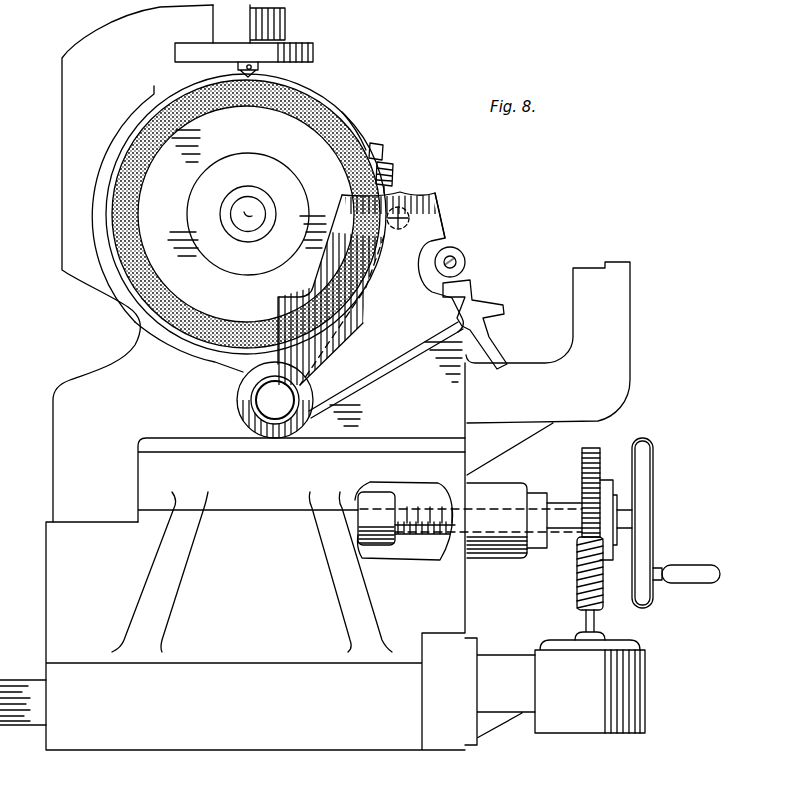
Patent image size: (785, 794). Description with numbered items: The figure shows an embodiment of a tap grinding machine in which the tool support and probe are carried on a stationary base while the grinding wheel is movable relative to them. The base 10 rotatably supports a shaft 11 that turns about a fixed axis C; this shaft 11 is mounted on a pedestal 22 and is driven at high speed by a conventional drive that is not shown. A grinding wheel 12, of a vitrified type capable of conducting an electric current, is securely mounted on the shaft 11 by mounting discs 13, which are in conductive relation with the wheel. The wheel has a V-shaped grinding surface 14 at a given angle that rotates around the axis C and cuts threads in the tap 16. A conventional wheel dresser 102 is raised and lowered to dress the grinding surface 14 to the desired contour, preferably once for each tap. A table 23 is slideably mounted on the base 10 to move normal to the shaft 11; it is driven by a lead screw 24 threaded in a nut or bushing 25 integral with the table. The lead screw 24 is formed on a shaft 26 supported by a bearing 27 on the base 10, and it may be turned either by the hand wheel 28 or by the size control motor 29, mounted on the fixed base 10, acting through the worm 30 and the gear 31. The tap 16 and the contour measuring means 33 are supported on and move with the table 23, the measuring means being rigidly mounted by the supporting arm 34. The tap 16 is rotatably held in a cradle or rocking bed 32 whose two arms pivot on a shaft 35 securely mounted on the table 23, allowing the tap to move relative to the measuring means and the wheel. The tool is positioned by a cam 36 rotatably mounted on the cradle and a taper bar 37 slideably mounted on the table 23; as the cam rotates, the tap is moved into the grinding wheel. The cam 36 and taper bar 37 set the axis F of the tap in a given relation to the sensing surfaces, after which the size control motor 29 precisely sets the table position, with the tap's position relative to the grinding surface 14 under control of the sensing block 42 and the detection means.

The base 10 is at (152, 732).
The shaft 11 is at (256, 207).
The grinding wheel 12 is at (330, 108).
The mounting discs 13 is at (268, 164).
The grinding surface 14 is at (356, 130).
The tap 16 is at (441, 211).
The pedestal 22 is at (134, 352).
The table 23 is at (140, 470).
The lead screw 24 is at (431, 540).
The nut or bushing 25 is at (378, 500).
The shaft 26 is at (562, 508).
The bearing 27 is at (505, 556).
The hand wheel 28 is at (650, 477).
The size control motor 29 is at (645, 682).
The worm 30 is at (577, 600).
The gear 31 is at (594, 446).
The cradle or rocking bed 32 is at (441, 232).
The contour measuring means 33 is at (392, 146).
The supporting arm 34 is at (598, 268).
The shaft 35 is at (270, 400).
The cam 36 is at (467, 262).
The taper bar 37 is at (482, 294).
The sensing block 42 is at (396, 172).
The wheel dresser 102 is at (321, 44).
The fixed axis C is at (254, 216).
The axis of the tap F is at (432, 196).